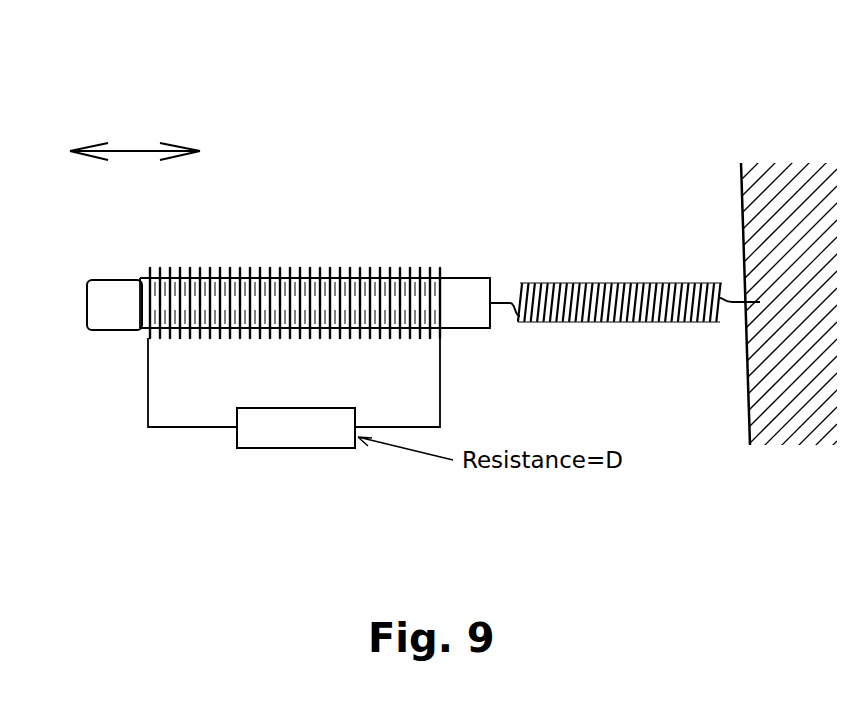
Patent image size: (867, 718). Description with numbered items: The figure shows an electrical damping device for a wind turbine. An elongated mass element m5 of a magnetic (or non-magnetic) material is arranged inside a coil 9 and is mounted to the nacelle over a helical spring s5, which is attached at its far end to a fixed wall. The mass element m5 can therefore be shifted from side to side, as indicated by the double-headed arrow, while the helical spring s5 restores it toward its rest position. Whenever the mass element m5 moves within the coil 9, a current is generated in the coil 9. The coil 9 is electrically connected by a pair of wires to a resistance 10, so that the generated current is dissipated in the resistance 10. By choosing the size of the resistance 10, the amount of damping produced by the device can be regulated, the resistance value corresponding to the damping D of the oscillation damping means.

The mass element m5 is at (113, 287).
The coil 9 is at (352, 290).
The helical spring s5 is at (575, 300).
The resistance 10 is at (259, 442).